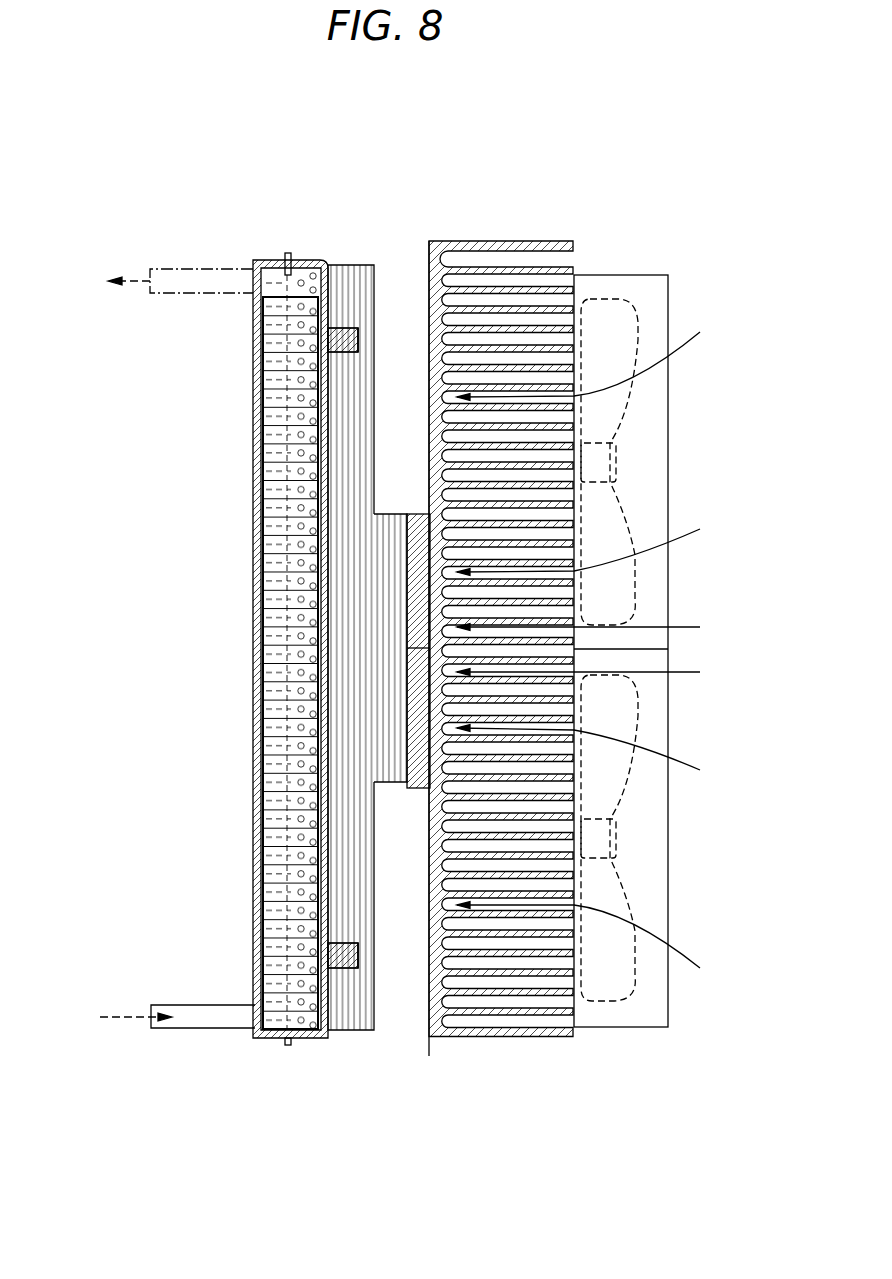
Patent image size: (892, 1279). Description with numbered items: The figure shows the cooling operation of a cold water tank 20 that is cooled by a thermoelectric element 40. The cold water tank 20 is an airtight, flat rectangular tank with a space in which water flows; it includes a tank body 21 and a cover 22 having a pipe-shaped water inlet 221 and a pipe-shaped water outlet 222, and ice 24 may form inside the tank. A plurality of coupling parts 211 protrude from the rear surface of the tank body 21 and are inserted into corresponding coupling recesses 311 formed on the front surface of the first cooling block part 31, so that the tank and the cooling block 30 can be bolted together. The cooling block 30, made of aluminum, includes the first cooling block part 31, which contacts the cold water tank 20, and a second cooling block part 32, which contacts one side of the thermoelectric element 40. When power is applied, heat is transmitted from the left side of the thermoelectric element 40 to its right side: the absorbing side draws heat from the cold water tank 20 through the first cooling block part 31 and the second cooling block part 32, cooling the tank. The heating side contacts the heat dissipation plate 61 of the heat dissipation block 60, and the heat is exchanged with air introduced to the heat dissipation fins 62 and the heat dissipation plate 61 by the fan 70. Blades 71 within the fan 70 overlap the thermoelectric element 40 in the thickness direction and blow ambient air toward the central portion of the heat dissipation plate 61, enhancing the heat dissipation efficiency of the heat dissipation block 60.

The cold water tank 20 is at (200, 644).
The tank body 21 is at (307, 639).
The coupling part 211 is at (342, 960).
The cover 22 is at (256, 484).
The water inlet 221 is at (197, 1030).
The water outlet 222 is at (197, 268).
The ice 24 is at (300, 275).
The cooling block 30 is at (384, 727).
The first cooling block part 31 is at (358, 1020).
The coupling recess 311 is at (350, 972).
The second cooling block part 32 is at (392, 775).
The thermoelectric element 40 is at (415, 513).
The heat dissipation block 60 is at (496, 579).
The heat dissipation plate 61 is at (434, 242).
The heat dissipation fin 62 is at (420, 142).
The fan 70 is at (578, 593).
The blade 71 is at (606, 299).